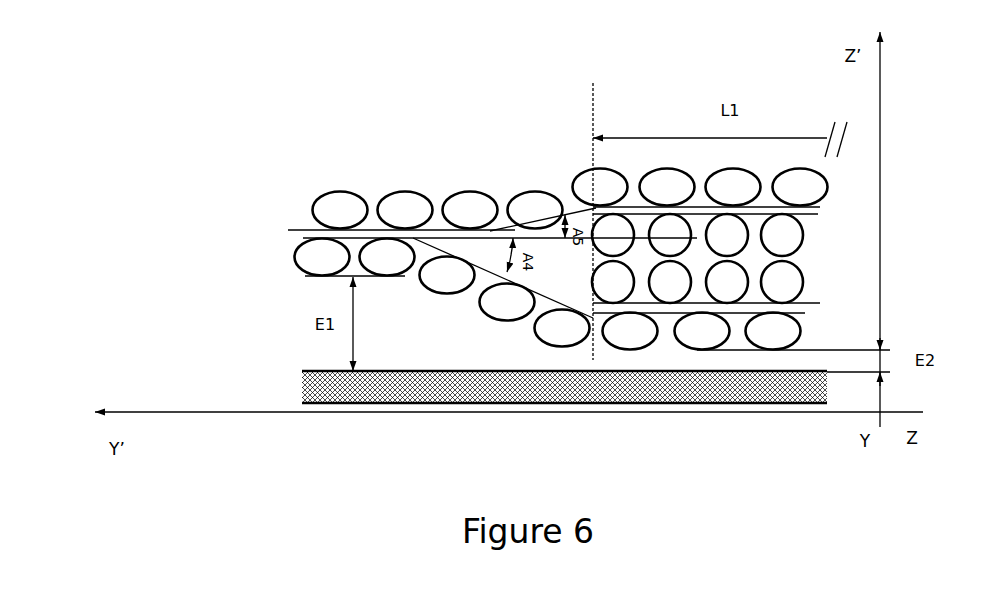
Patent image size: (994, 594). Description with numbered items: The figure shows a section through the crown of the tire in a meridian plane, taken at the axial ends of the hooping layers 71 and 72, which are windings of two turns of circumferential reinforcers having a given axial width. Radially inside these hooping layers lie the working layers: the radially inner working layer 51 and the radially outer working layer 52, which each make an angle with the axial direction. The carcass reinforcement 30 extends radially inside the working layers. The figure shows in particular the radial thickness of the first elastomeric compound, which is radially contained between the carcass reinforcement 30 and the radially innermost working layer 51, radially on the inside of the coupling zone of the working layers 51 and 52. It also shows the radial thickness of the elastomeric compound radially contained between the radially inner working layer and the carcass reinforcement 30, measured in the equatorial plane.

The carcass reinforcement 30 is at (337, 383).
The radially inner working layer 51 is at (300, 270).
The radially outer working layer 52 is at (337, 206).
The circumferential reinforcers 71 is at (787, 283).
The circumferential reinforcers 72 is at (787, 240).